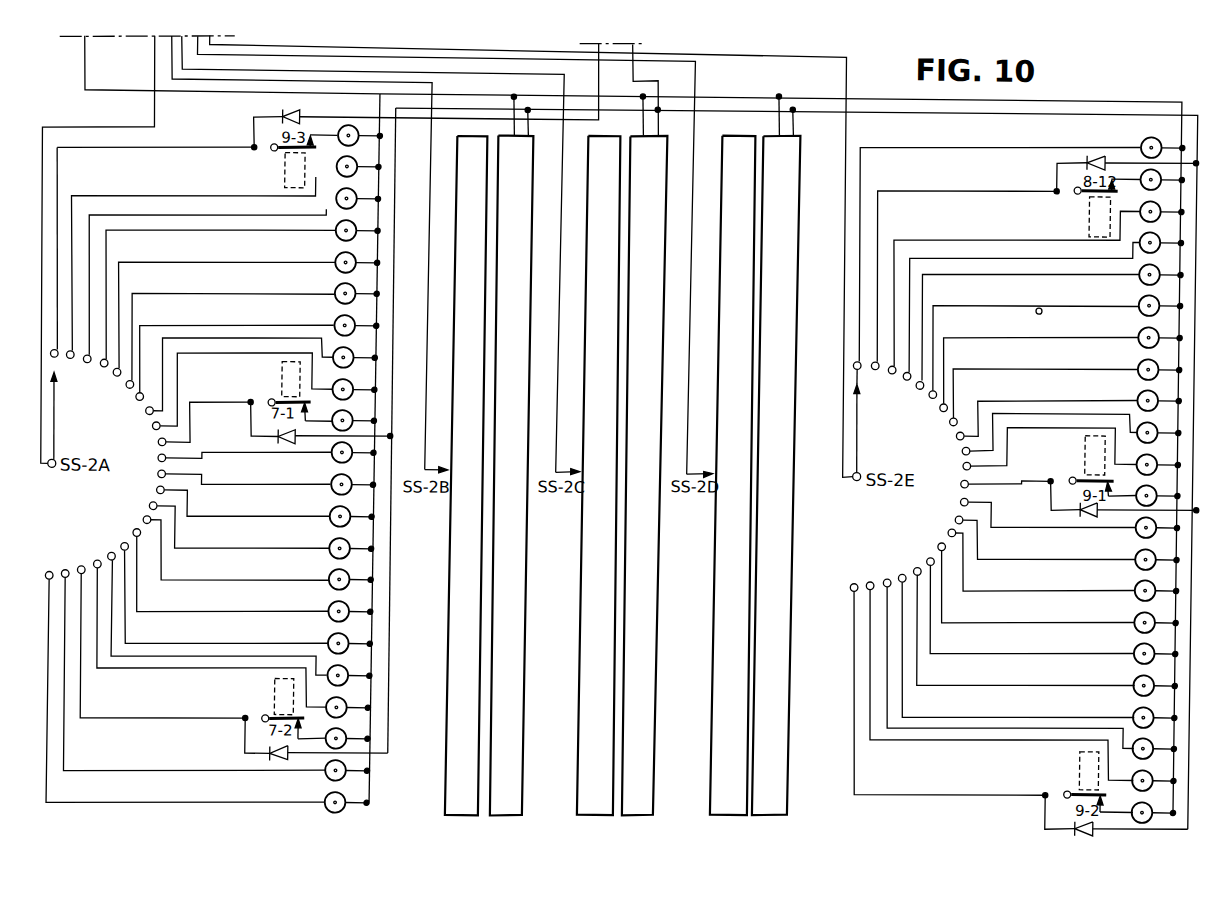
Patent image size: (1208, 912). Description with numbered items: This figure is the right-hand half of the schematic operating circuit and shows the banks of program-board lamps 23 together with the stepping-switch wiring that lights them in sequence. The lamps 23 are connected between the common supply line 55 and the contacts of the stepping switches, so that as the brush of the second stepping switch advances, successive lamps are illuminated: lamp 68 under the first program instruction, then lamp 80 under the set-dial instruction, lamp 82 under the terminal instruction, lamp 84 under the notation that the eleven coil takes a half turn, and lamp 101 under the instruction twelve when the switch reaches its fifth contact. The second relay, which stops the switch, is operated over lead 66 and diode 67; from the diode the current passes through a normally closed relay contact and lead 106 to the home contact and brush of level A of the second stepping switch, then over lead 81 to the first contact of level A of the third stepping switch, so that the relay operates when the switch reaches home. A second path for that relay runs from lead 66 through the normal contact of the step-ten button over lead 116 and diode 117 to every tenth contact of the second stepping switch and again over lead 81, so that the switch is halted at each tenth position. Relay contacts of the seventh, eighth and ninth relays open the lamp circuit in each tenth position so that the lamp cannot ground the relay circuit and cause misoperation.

The lamps 23 is at (334, 218).
The common supply line 55 is at (118, 97).
The lead 66 is at (593, 84).
The diode 67 is at (298, 118).
The lamp 68 is at (348, 146).
The lamp 80 is at (348, 179).
The lead 81 is at (153, 122).
The lamp 82 is at (349, 210).
The lamp 84 is at (349, 241).
The lamp 101 is at (349, 273).
The lead 106 is at (147, 156).
The lead 116 is at (392, 340).
The diode 117 is at (290, 446).